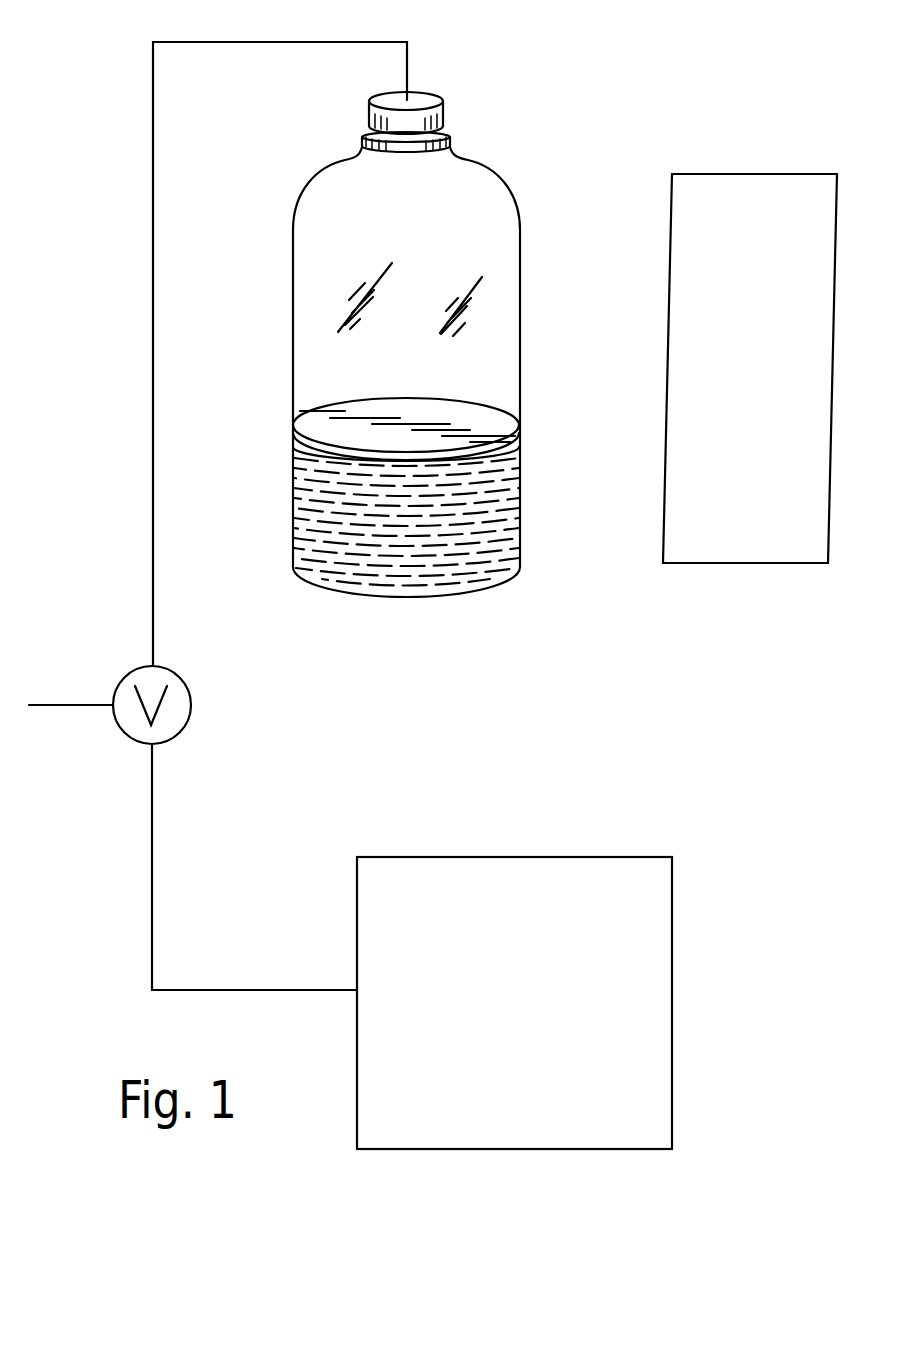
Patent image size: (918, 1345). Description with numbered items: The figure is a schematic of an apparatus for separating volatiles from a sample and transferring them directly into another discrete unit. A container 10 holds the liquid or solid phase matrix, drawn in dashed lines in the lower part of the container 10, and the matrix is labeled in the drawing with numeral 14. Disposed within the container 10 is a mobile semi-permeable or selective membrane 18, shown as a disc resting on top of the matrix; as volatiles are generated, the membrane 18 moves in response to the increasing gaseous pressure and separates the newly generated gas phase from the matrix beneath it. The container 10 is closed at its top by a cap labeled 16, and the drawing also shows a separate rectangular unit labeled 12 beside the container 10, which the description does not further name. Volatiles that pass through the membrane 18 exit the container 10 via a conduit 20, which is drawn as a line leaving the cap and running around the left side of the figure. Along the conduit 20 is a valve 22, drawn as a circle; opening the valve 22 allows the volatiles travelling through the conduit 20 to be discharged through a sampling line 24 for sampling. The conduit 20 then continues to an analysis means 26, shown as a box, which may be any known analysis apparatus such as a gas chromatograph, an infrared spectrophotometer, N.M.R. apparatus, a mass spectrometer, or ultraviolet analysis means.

The container 10 is at (562, 157).
The electrode plate 12 is at (715, 198).
The liquid 14 is at (483, 590).
The cap 16 is at (423, 104).
The membrane 18 is at (477, 427).
The conduit 20 is at (154, 160).
The valve 22 is at (128, 668).
The sampling line 24 is at (80, 712).
The analysis means 26 is at (562, 1107).